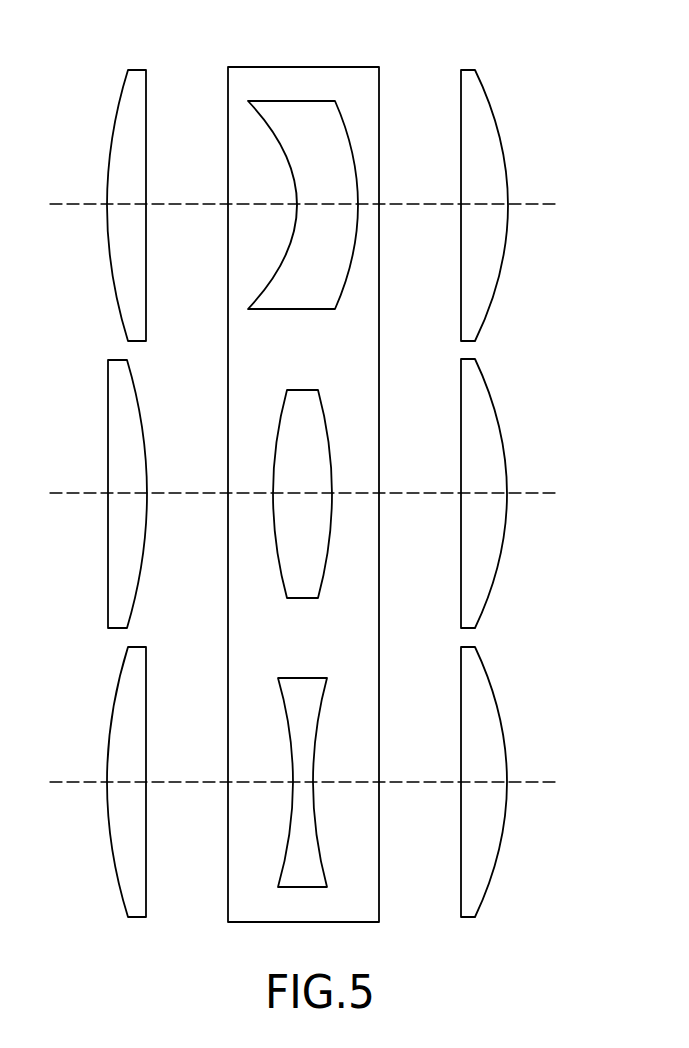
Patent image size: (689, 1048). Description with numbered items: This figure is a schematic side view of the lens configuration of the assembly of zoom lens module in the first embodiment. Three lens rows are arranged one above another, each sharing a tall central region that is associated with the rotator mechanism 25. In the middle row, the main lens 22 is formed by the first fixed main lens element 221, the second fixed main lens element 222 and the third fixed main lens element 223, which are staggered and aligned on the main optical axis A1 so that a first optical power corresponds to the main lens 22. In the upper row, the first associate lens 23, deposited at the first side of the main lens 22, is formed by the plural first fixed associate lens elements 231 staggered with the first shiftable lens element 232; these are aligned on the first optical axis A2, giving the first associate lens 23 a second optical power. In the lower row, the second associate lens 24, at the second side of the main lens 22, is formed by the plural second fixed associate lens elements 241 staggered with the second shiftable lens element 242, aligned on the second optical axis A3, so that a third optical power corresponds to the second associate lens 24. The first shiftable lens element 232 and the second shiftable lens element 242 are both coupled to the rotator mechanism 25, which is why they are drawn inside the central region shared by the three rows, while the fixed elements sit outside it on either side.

The rotator mechanism 25 is at (273, 64).
The main lens 22 is at (308, 489).
The first associate lens 23 is at (308, 199).
The second associate lens 24 is at (308, 779).
The first fixed main lens element 221 is at (484, 458).
The second fixed main lens element 222 is at (319, 461).
The third fixed main lens element 223 is at (122, 460).
The first fixed associate lens elements 231 is at (122, 172).
The first shiftable lens element 232 is at (343, 172).
The second fixed associate lens elements 241 is at (122, 748).
The second shiftable lens element 242 is at (305, 750).
The main optical axis A1 is at (525, 491).
The first optical axis A2 is at (525, 202).
The second optical axis A3 is at (525, 780).